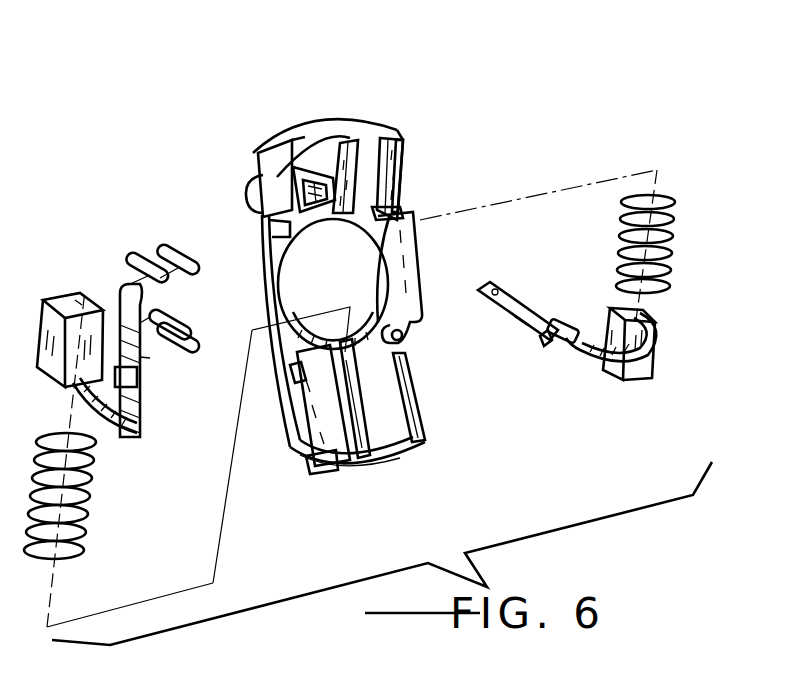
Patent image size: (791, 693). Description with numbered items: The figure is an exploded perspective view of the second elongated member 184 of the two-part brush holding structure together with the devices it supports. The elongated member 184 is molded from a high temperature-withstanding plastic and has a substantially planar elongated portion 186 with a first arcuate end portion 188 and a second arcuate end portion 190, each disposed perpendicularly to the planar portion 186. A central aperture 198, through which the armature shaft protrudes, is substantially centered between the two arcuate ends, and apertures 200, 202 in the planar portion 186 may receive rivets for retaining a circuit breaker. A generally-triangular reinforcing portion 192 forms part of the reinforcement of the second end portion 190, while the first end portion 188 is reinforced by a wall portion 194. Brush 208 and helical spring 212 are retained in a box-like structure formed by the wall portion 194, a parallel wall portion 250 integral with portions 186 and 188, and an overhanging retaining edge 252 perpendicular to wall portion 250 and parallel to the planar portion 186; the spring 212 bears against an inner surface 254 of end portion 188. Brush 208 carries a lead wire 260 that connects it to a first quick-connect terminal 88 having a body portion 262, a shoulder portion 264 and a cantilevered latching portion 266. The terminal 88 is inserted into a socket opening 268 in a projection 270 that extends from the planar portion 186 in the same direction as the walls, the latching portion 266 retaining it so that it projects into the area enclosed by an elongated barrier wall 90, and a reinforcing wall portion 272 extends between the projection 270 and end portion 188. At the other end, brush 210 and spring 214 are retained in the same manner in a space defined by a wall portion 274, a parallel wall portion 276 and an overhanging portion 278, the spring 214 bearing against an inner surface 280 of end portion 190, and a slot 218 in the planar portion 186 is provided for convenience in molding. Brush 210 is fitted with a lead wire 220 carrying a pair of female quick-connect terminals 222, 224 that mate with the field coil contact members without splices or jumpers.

The first quick-connect terminal 88 is at (495, 283).
The elongated barrier wall 90 is at (240, 150).
The second elongated member 184 is at (427, 247).
The planar elongated portion 186 is at (245, 190).
The first arcuate end portion 188 is at (345, 110).
The second arcuate end portion 190 is at (395, 458).
The generally-triangular reinforcing portion 192 is at (420, 365).
The wall portion 194 is at (403, 190).
The central aperture 198 is at (297, 238).
The aperture 200 is at (410, 215).
The aperture 202 is at (413, 326).
The brush 208 is at (660, 362).
The brush 210 is at (70, 305).
The helical spring 212 is at (674, 238).
The helical spring 214 is at (100, 500).
The slot 218 is at (300, 378).
The lead wire 220 is at (140, 445).
The female quick-connect terminal 222 is at (172, 348).
The female quick-connect terminal 224 is at (198, 285).
The wall portion 250 is at (340, 125).
The overhanging portion or retaining edge 252 is at (390, 130).
The inner surface 254 is at (402, 150).
The lead wire 260 is at (603, 365).
The body portion 262 is at (548, 325).
The shoulder portion 264 is at (578, 338).
The cantilevered latching portion 266 is at (527, 325).
The opening 268 is at (302, 130).
The projection 270 is at (318, 130).
The reinforcing wall portion 272 is at (258, 130).
The wall portion 274 is at (297, 450).
The wall portion 276 is at (365, 347).
The overhanging portion 278 is at (350, 458).
The inner surface 280 is at (322, 474).